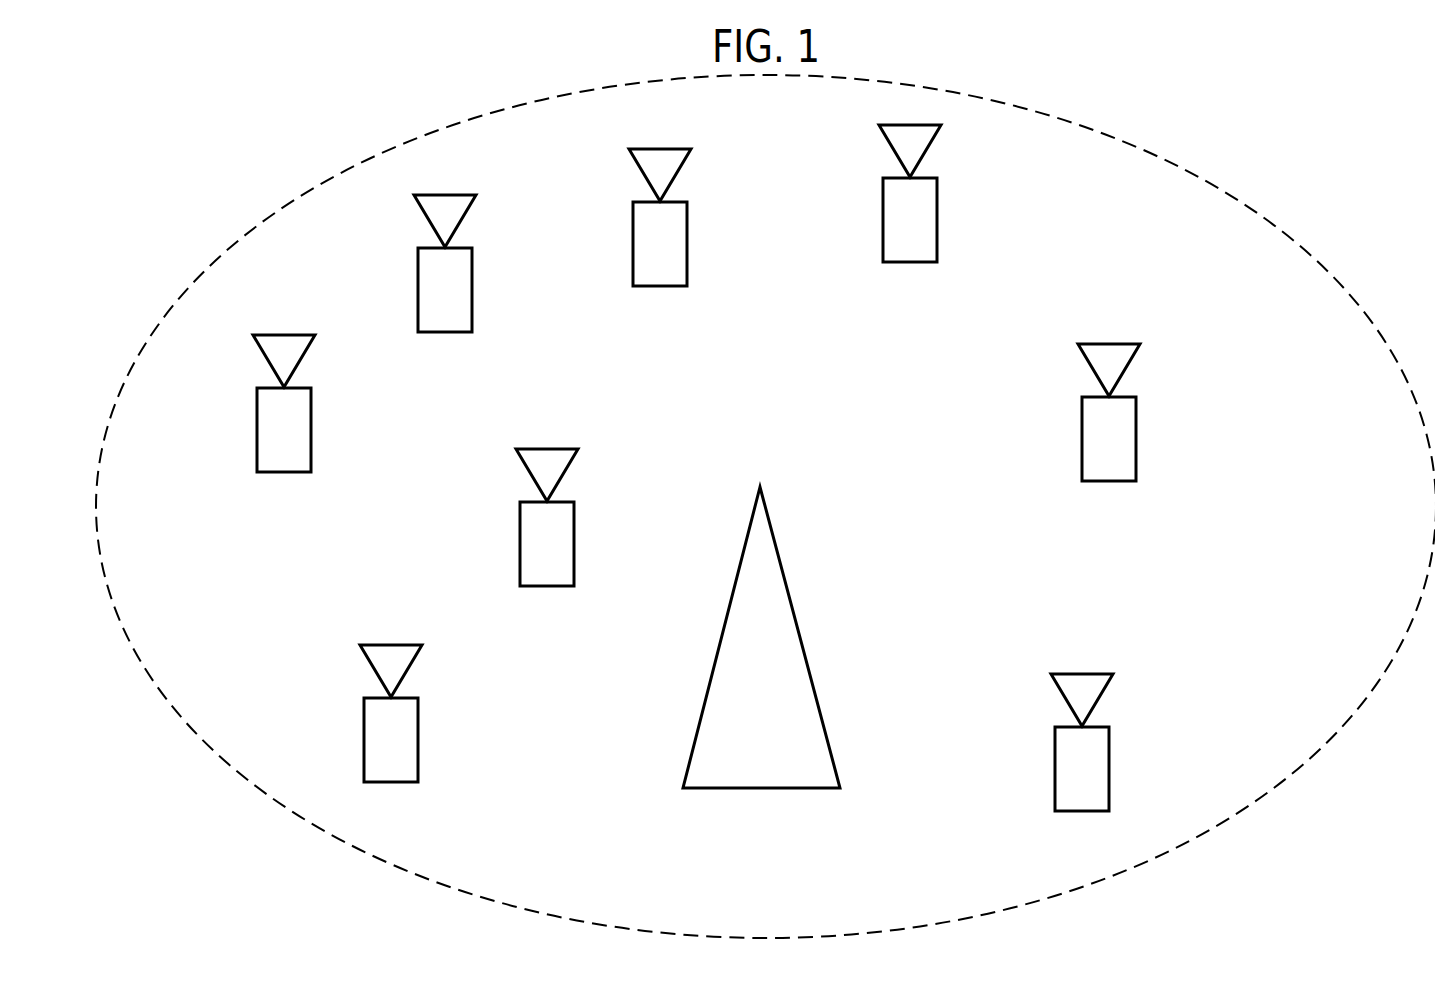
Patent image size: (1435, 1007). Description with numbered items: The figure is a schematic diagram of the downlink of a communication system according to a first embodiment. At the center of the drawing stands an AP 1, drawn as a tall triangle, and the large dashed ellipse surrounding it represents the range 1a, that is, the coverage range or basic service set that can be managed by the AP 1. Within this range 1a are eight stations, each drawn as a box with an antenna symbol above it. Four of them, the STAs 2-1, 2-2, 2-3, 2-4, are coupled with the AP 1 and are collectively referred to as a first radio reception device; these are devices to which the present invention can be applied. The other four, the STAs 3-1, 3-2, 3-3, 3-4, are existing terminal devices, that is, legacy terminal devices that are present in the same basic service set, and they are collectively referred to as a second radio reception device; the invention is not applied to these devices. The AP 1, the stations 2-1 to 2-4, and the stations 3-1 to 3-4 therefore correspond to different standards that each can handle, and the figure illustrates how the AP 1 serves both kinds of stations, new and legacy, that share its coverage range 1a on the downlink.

The AP 1 is at (767, 790).
The range 1a is at (1077, 893).
The STA 2-1 is at (400, 782).
The STA 2-2 is at (557, 586).
The STA 2-3 is at (666, 286).
The STA 2-4 is at (473, 300).
The STA 3-1 is at (1109, 770).
The STA 3-2 is at (1117, 481).
The STA 3-3 is at (920, 262).
The STA 3-4 is at (298, 472).